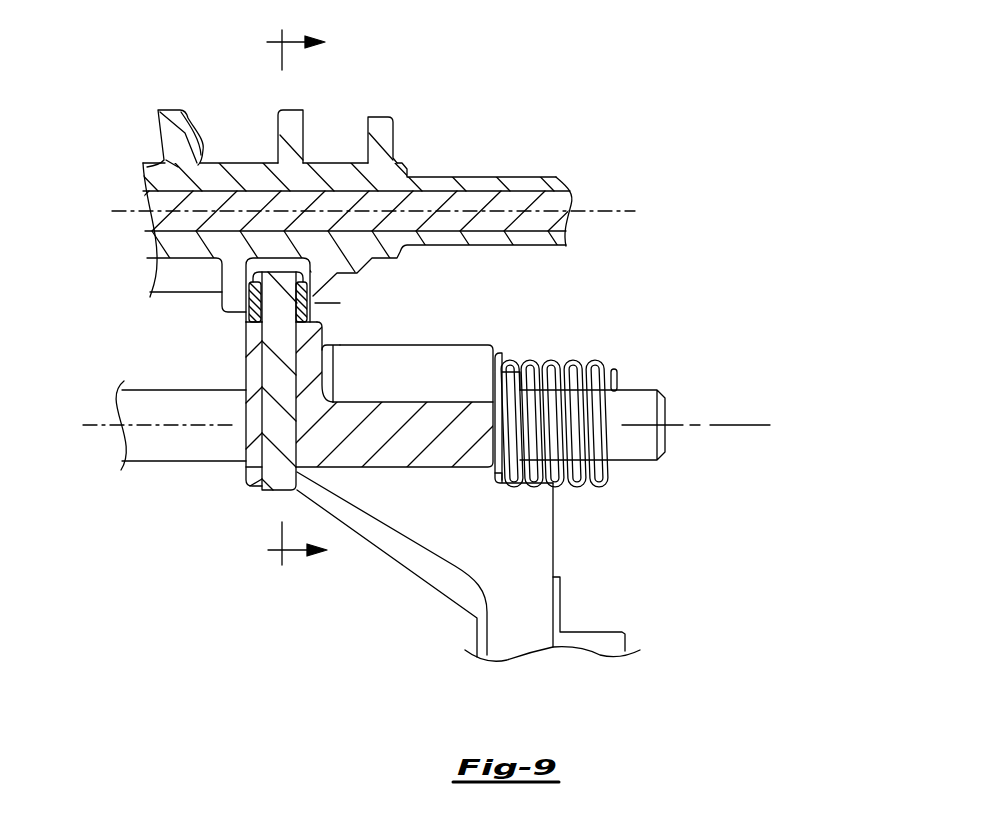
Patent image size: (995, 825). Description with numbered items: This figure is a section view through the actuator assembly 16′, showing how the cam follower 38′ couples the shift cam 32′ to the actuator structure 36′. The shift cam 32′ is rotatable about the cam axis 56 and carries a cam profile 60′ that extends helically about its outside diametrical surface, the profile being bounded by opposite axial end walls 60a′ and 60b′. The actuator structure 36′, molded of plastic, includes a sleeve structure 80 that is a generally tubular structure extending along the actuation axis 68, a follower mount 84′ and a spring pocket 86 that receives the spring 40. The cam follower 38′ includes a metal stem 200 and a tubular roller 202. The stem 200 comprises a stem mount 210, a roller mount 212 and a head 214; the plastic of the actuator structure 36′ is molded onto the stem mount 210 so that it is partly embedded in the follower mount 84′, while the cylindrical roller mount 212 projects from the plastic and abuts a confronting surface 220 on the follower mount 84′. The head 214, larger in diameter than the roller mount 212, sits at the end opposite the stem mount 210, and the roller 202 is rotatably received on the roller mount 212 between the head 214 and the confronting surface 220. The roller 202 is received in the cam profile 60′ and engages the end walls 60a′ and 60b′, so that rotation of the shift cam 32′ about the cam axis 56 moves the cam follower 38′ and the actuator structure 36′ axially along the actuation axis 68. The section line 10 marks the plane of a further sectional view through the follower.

The section line 10 is at (277, 298).
The actuator assembly 16′ is at (567, 107).
The shift cam 32′ is at (378, 117).
The actuator structure 36′ is at (527, 523).
The cam follower 38′ is at (278, 336).
The spring 40 is at (600, 368).
The cam axis 56 is at (617, 212).
The cam profile 60′ is at (313, 256).
The axial end wall 60a′ is at (250, 298).
The axial end wall 60b′ is at (312, 303).
The actuation axis 68 is at (752, 425).
The sleeve structure 80 is at (426, 355).
The follower mount 84′ is at (308, 364).
The spring pocket 86 is at (500, 346).
The stem 200 is at (273, 370).
The roller 202 is at (250, 286).
The stem mount 210 is at (275, 423).
The roller mount 212 is at (257, 262).
The head 214 is at (282, 305).
The confronting surface 220 is at (322, 332).